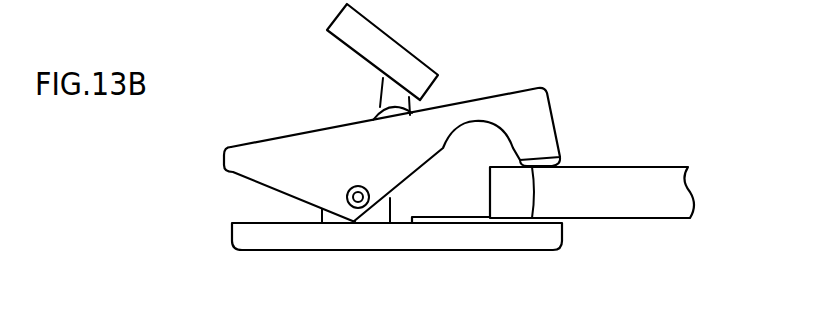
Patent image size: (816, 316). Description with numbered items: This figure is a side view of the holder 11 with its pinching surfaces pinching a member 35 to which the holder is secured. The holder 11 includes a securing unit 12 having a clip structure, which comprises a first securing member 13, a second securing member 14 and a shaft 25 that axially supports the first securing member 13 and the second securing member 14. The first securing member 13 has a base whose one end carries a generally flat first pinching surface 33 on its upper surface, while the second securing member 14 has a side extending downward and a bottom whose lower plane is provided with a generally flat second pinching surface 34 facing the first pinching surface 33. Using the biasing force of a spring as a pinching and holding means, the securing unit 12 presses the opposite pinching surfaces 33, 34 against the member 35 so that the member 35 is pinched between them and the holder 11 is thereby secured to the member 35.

The holder 11 is at (265, 141).
The securing unit 12 is at (128, 172).
The first securing member 13 is at (245, 235).
The second securing member 14 is at (227, 163).
The shaft 25 is at (358, 208).
The first pinching surface 33 is at (510, 218).
The second pinching surface 34 is at (533, 222).
The member to which the holder is secured 35 is at (659, 166).